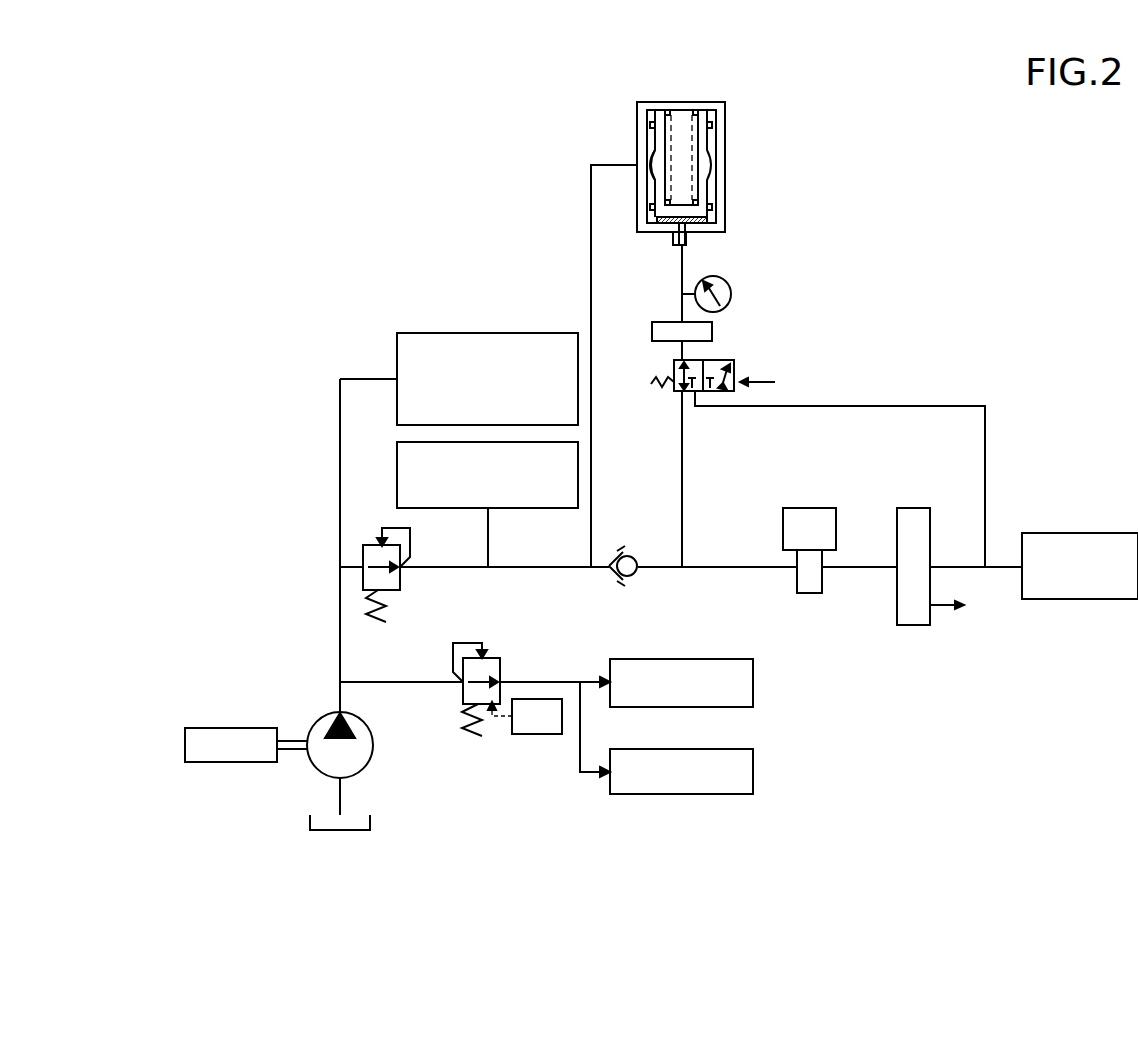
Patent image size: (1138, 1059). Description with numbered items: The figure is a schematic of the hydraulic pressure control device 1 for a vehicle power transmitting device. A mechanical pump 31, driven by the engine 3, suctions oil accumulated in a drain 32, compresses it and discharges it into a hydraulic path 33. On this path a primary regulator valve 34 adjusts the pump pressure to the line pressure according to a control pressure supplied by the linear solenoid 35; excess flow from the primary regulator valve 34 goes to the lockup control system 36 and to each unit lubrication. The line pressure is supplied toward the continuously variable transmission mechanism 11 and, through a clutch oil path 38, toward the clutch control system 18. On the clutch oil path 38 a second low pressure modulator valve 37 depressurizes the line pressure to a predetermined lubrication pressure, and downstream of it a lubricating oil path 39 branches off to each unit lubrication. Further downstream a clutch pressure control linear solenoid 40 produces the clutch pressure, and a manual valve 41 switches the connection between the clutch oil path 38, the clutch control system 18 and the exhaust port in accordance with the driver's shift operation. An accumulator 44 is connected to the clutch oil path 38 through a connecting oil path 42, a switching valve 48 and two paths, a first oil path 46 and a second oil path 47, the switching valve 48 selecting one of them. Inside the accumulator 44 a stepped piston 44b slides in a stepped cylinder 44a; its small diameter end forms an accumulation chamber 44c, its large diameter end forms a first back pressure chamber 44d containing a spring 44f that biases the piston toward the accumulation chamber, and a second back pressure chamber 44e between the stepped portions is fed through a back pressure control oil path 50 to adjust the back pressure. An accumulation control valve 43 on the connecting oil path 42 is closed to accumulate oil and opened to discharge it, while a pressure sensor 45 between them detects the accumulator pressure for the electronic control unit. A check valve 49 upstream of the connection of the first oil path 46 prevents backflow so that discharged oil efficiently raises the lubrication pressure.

The hydraulic pressure control device 1 is at (453, 243).
The engine 3 is at (232, 738).
The continuously variable transmission mechanism 11 is at (552, 333).
The C1 control system 18 is at (1081, 533).
The mechanical pump 31 is at (366, 724).
The drain 32 is at (372, 822).
The hydraulic path 33 is at (339, 533).
The primary regulator valve 34 is at (491, 658).
The SLS linear solenoid 35 is at (537, 734).
The L/U control system 36 is at (711, 659).
The LPM No. 2 valve 37 is at (371, 545).
The clutch oil path 38 is at (650, 570).
The lubricating oil path 39 is at (490, 536).
The SLC linear solenoid 40 is at (809, 508).
The manual valve 41 is at (912, 508).
The connecting oil path 42 is at (681, 283).
The accumulation control valve 43 is at (652, 330).
The accumulator 44 is at (685, 157).
The stepped cylinder 44a is at (660, 117).
The stepped piston 44b is at (710, 137).
The accumulation chamber 44c is at (669, 222).
The first back pressure chamber 44d is at (683, 120).
The second back pressure chamber 44e is at (650, 170).
The spring 44f is at (655, 106).
The pressure sensor 45 is at (714, 276).
The first oil path 46 is at (681, 450).
The second oil path 47 is at (879, 406).
The switching valve 48 is at (728, 360).
The check valve 49 is at (631, 556).
The back pressure control oil path 50 is at (590, 245).